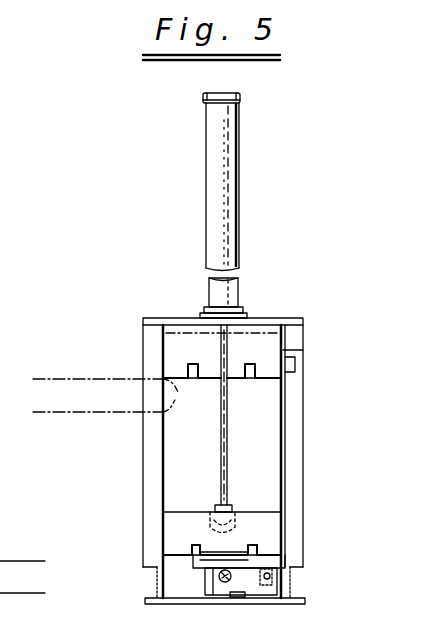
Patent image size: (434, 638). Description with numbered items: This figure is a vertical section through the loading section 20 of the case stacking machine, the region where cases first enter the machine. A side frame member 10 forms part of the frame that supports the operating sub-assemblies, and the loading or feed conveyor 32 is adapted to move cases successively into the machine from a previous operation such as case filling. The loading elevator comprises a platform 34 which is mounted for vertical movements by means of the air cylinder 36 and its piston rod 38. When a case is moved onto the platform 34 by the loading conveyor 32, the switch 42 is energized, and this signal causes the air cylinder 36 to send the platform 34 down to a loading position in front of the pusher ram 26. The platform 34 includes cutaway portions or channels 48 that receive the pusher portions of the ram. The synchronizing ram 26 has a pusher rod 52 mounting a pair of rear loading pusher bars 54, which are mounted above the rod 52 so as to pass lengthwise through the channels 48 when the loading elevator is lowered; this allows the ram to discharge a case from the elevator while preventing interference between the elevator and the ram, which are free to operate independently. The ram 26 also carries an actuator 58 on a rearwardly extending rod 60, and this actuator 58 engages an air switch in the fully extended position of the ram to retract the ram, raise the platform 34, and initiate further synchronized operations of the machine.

The side frame member 10 is at (150, 448).
The loading section 20 is at (200, 194).
The pusher ram 26 is at (247, 504).
The loading conveyor 32 is at (95, 378).
The platform 34 is at (190, 372).
The air cylinder 36 is at (228, 192).
The piston rod 38 is at (220, 428).
The switch 42 is at (290, 354).
The channels 48 is at (249, 376).
The pusher rod 52 is at (225, 583).
The pusher bars 54 is at (247, 551).
The actuator 58 is at (250, 585).
The rearwardly extending rod 60 is at (270, 577).